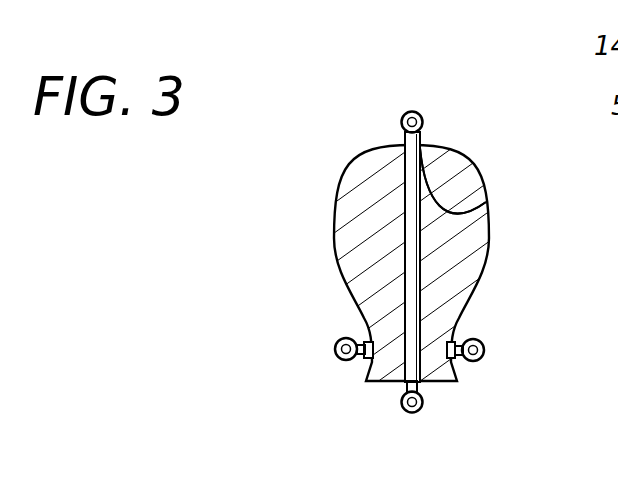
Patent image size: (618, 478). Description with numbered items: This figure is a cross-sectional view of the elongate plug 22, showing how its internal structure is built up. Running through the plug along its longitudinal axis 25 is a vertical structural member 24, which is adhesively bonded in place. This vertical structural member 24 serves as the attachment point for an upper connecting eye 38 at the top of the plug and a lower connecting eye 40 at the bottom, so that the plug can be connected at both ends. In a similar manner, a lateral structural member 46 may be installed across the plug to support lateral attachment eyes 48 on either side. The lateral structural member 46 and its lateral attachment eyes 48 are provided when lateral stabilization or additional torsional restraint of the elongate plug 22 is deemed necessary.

The elongate plug 22 is at (458, 157).
The vertical structural member 24 is at (482, 178).
The longitudinal axis 25 is at (453, 181).
The upper connecting eye 38 is at (401, 113).
The lower connecting eye 40 is at (423, 408).
The lateral structural member 46 is at (366, 341).
The lateral attachment eyes 48 is at (345, 360).